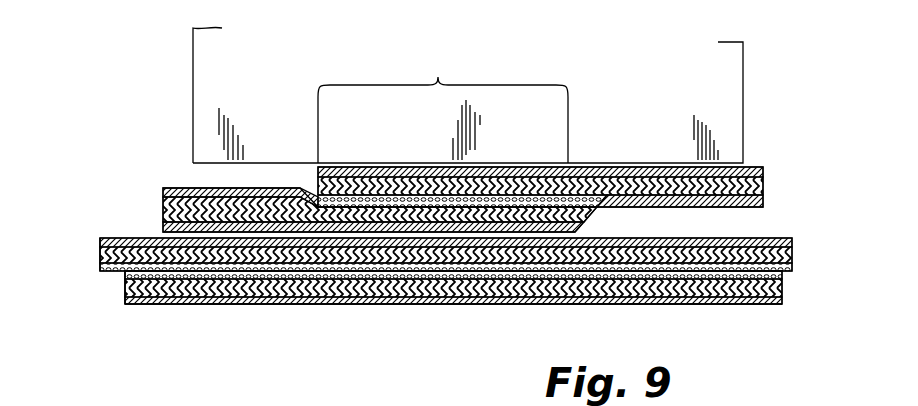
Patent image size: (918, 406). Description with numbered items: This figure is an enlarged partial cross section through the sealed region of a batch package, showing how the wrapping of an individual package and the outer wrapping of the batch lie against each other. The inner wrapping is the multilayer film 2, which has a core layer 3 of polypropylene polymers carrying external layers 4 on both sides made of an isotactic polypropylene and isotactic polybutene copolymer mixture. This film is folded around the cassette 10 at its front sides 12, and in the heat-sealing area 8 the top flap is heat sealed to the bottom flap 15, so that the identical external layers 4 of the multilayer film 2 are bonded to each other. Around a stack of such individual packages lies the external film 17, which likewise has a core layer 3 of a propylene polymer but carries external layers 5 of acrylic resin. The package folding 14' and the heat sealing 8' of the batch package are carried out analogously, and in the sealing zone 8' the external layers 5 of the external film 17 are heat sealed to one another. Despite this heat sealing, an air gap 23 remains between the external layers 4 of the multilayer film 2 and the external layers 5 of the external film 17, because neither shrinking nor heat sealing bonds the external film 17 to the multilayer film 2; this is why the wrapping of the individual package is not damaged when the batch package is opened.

The multilayer film 2 is at (53, 68).
The core layer 3 is at (160, 210).
The external layers 4 is at (163, 190).
The external layers 5 is at (792, 240).
The heat-sealing area 8 is at (443, 103).
The heat sealing 8' is at (453, 339).
The cassette 10 is at (272, 104).
The front sides 12 is at (207, 164).
The package folding 14' is at (78, 227).
The bottom flap 15 is at (123, 305).
The external film 17 is at (843, 182).
The air gap 23 is at (578, 230).